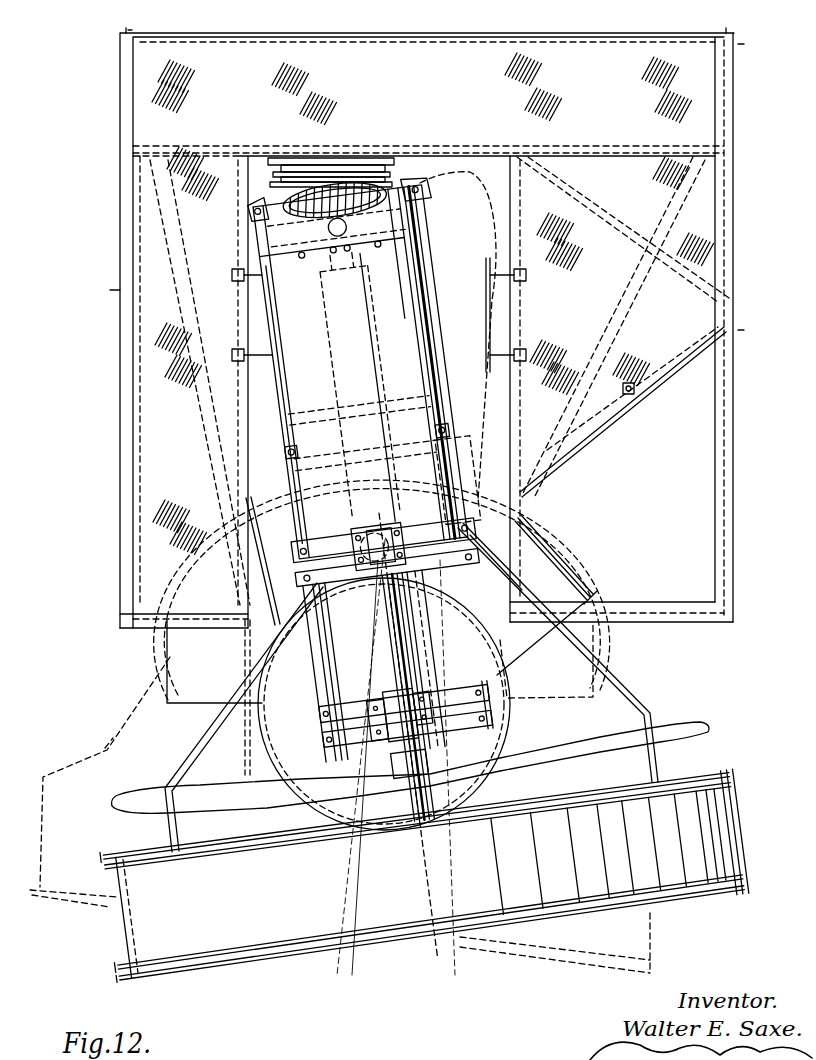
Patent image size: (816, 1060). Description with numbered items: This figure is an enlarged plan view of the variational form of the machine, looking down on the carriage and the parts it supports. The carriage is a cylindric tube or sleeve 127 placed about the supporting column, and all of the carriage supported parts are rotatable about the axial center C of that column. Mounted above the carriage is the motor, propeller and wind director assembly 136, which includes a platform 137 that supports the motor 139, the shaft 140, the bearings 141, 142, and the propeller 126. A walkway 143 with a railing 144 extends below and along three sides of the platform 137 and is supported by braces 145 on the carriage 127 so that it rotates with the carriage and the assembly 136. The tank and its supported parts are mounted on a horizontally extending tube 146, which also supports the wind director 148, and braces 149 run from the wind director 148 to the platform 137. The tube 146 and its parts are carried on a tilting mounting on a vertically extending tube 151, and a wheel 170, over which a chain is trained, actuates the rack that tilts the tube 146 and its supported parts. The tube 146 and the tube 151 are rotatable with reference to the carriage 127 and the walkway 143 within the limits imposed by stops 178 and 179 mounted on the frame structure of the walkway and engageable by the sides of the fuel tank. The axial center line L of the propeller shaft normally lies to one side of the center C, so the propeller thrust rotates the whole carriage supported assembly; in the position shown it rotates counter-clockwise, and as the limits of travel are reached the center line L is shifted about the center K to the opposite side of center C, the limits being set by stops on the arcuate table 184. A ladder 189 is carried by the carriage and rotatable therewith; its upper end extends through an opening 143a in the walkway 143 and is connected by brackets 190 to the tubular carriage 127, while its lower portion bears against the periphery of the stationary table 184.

The propeller 126 is at (683, 725).
The cylindric tube or sleeve 127 is at (262, 748).
The motor, propeller and wind director assembly 136 is at (443, 284).
The platform 137 is at (317, 655).
The motor 139 is at (402, 355).
The shaft 140 is at (413, 648).
The bearing 141 is at (410, 622).
The bearing 142 is at (423, 700).
The walkway 143 is at (433, 304).
The opening in the walkway 143a is at (690, 498).
The railing 144 is at (482, 34).
The braces 145 is at (552, 487).
The horizontally extending tube 146 is at (393, 953).
The wind director 148 is at (260, 943).
The braces 149 is at (627, 693).
The vertically extending tube 151 is at (378, 520).
The wheel 170 is at (278, 160).
The stop 178 is at (486, 298).
The stop 179 is at (273, 372).
The arcuate table 184 is at (187, 650).
The strut 189 is at (568, 574).
The brackets 190 is at (490, 546).
The center K is at (350, 532).
The axial center C is at (383, 690).
The axial center line of the propeller shaft L is at (343, 870).